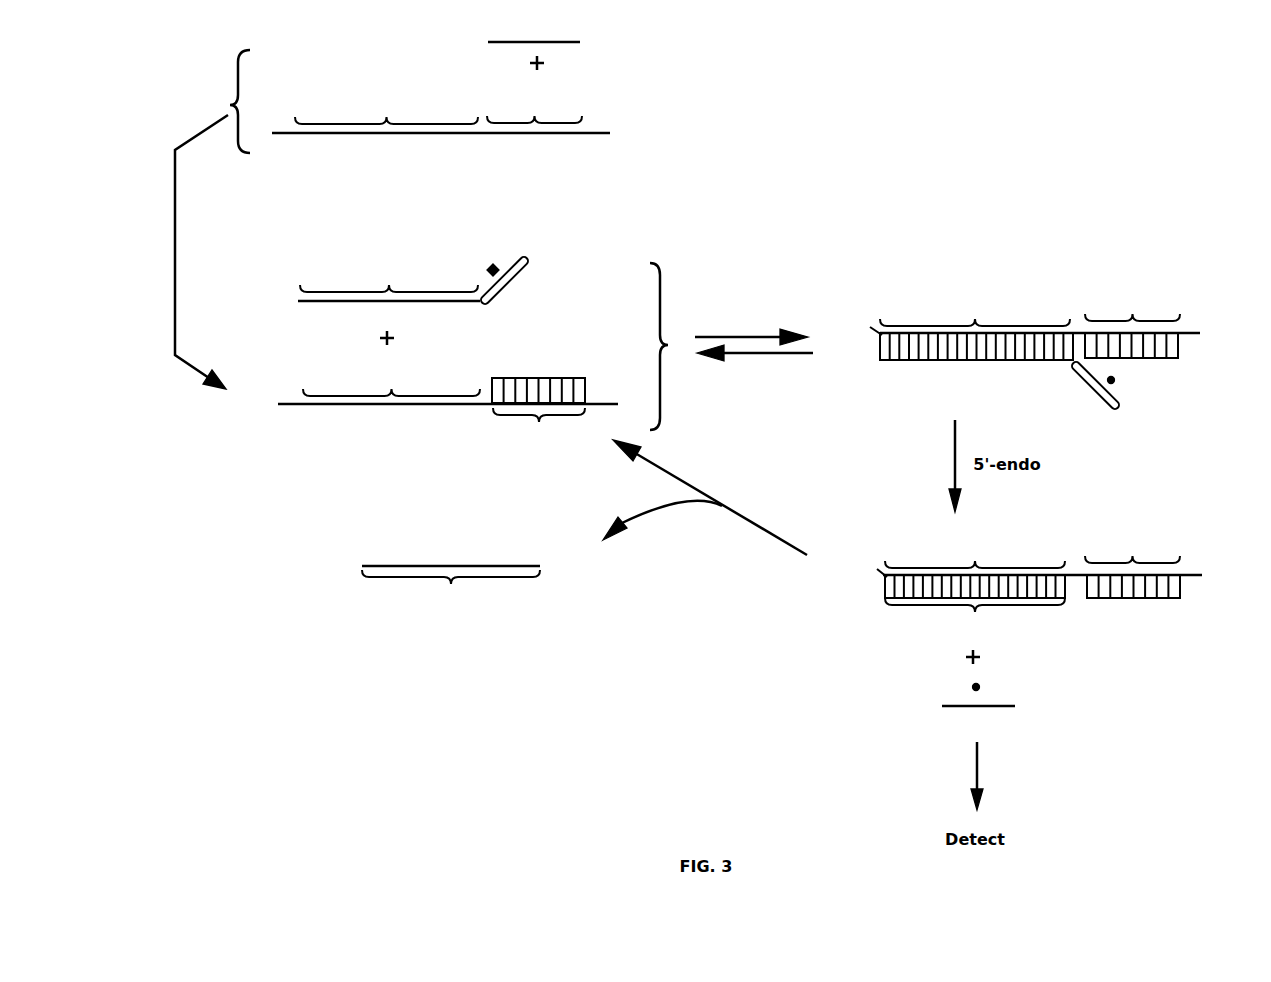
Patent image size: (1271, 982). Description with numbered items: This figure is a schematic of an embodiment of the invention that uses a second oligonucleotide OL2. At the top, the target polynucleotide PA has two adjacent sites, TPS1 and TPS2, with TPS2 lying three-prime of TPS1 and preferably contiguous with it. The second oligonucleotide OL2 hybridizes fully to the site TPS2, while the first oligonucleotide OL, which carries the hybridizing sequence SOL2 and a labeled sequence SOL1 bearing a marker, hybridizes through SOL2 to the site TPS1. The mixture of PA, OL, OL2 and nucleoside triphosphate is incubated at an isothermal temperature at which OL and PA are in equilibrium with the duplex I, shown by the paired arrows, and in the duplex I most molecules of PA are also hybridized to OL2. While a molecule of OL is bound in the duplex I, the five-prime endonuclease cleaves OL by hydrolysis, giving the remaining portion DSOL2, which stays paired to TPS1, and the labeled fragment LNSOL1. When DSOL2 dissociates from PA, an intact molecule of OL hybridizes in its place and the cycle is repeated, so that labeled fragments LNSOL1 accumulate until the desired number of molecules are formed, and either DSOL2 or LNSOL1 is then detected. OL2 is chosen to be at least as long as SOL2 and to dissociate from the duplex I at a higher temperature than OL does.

The second oligonucleotide OL2 is at (835, 320).
The site of hybridization of SOL2" TPS1 is at (682, 331).
The site of hybridization of OL2 TPS2 is at (833, 329).
The target polynucleotide PA is at (748, 355).
The first oligonucleotide OL is at (666, 340).
The labeled sequence of first oligonucleotide SOL1 is at (810, 329).
The hybridizing sequence of first oligonucleotide SOL2 is at (389, 277).
The duplex I is at (974, 396).
The remaining portion of cleaved oligonucleotide DSOL2 is at (703, 594).
The labeled fragment LNSOL1 is at (979, 712).